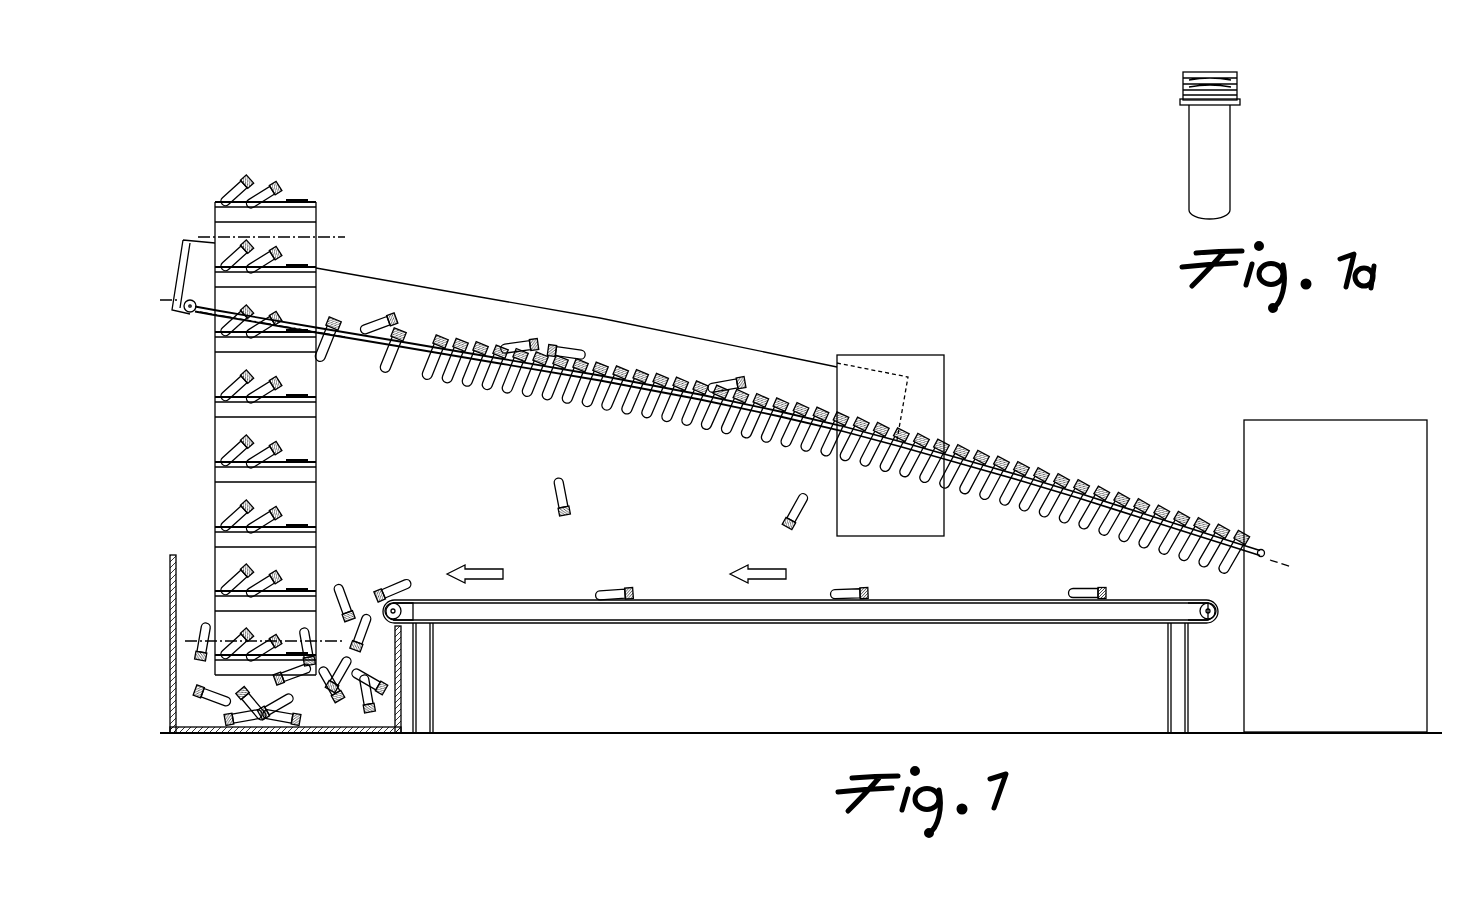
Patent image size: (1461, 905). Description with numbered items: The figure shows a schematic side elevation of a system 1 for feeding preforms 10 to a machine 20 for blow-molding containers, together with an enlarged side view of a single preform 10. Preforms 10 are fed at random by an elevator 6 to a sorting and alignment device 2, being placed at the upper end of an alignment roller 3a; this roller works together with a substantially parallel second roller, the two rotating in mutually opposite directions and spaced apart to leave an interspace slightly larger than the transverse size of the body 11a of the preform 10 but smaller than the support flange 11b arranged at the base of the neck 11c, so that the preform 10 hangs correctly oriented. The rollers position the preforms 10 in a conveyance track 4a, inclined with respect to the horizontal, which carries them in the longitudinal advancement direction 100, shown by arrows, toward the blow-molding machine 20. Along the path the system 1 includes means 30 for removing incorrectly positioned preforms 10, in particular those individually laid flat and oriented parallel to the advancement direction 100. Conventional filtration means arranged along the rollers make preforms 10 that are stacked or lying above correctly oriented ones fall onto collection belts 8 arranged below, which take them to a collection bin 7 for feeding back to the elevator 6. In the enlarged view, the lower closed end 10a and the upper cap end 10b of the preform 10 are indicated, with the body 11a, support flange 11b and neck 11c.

In FIG. 1, the system 1 is at (773, 258).
In FIG. 1, the sorting and alignment device 2 is at (648, 452).
In FIG. 1, the alignment roller 3a is at (352, 318).
In FIG. 1, the conveyance track 4a is at (992, 503).
In FIG. 1, the elevator 6 is at (322, 503).
In FIG. 1, the collection bin 7 is at (401, 657).
In FIG. 1, the collection belts 8 is at (545, 600).
In FIG. 1, the machine for blow-molding containers 20 is at (1358, 418).
In FIG. 1, the means for removing incorrectly positioned preforms 30 is at (898, 351).
In FIG. 1, the longitudinal advancement direction 100 is at (440, 302).
In FIG. 1a, the preform 10 is at (1214, 147).
In FIG. 1a, the closed bottom end of tube 10a is at (1193, 222).
In FIG. 1a, the cap end of tube 10b is at (1270, 80).
In FIG. 1a, the body 11a is at (1205, 172).
In FIG. 1a, the support flange 11b is at (1242, 104).
In FIG. 1a, the neck 11c is at (1238, 88).